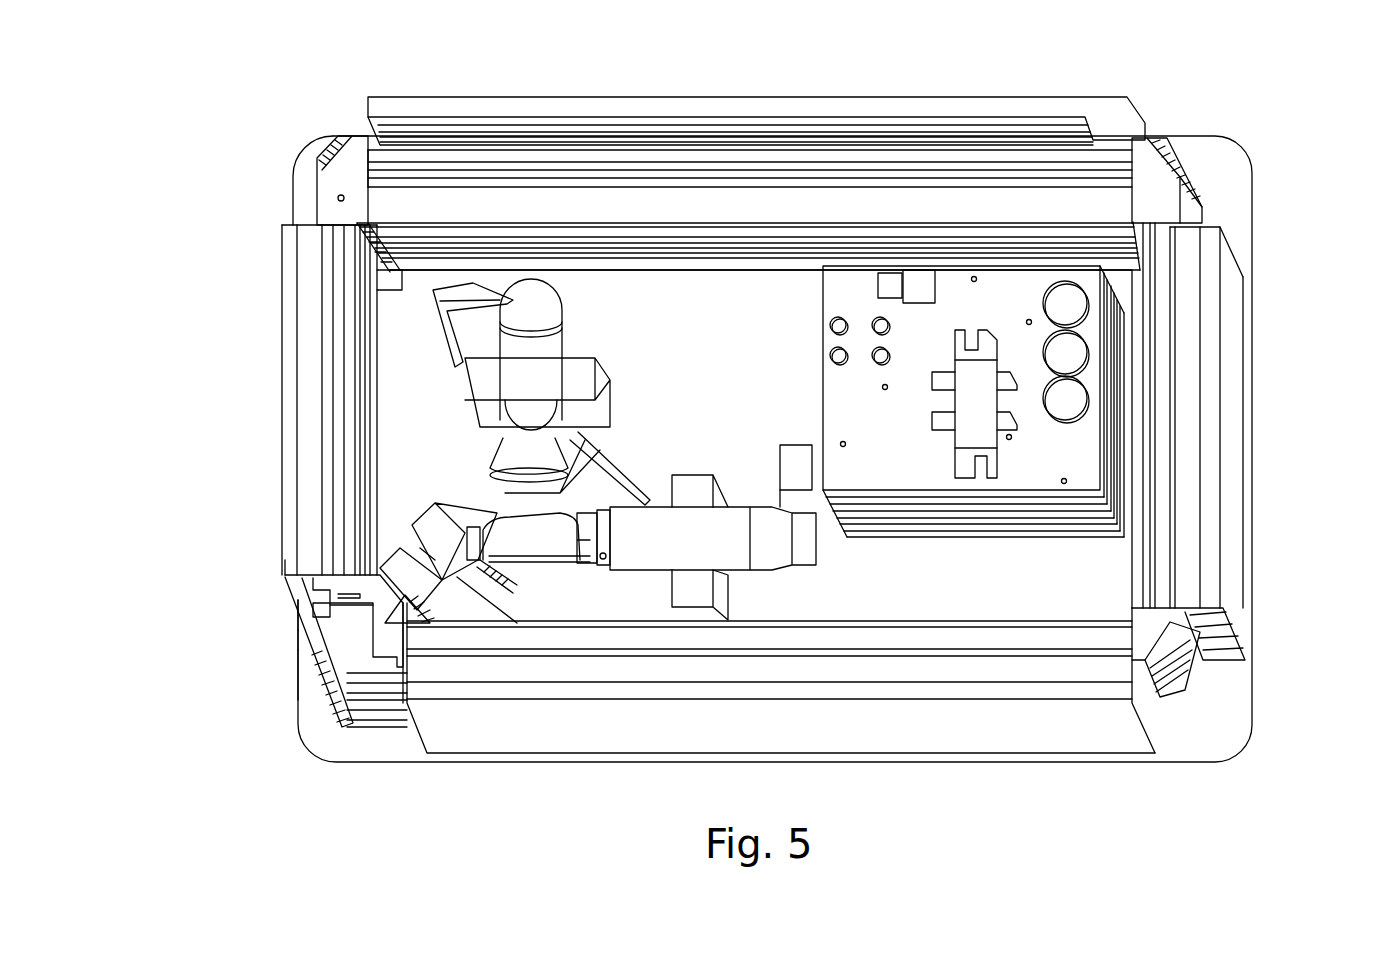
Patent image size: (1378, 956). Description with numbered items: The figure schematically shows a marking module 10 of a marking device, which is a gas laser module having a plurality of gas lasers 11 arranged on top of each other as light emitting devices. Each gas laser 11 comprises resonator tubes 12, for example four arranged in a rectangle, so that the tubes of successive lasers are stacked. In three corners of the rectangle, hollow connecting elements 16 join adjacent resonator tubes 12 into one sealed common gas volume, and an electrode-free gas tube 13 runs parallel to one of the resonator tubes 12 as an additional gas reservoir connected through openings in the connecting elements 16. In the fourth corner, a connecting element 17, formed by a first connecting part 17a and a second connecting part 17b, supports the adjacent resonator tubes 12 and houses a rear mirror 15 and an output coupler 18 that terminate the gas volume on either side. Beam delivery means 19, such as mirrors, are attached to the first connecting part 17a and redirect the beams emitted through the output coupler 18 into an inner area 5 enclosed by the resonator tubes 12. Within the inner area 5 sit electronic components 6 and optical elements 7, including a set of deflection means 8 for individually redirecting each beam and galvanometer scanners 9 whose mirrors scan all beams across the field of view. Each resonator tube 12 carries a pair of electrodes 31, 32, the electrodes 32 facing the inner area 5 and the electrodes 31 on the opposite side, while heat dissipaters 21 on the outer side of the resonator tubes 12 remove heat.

The inner area 5 is at (695, 389).
The electronic components 6 is at (818, 318).
The optical elements 7 is at (612, 360).
The set of deflection means 8 is at (437, 503).
The galvanometer scanners 9 is at (493, 450).
The marking module 10 is at (1198, 100).
The gas lasers 11 is at (792, 150).
The resonator tubes 12 is at (340, 306).
The gas tube 13 is at (608, 186).
The rear mirror 15 is at (330, 606).
The connecting elements 16 is at (340, 183).
The connecting element 17 is at (352, 630).
The first connecting part 17a is at (333, 628).
The second connecting part 17b is at (303, 590).
The output coupler 18 is at (347, 670).
The beam delivery means 19 is at (353, 657).
The heat dissipaters 21 is at (1195, 456).
The electrodes 31 is at (313, 348).
The electrodes 32 is at (693, 168).